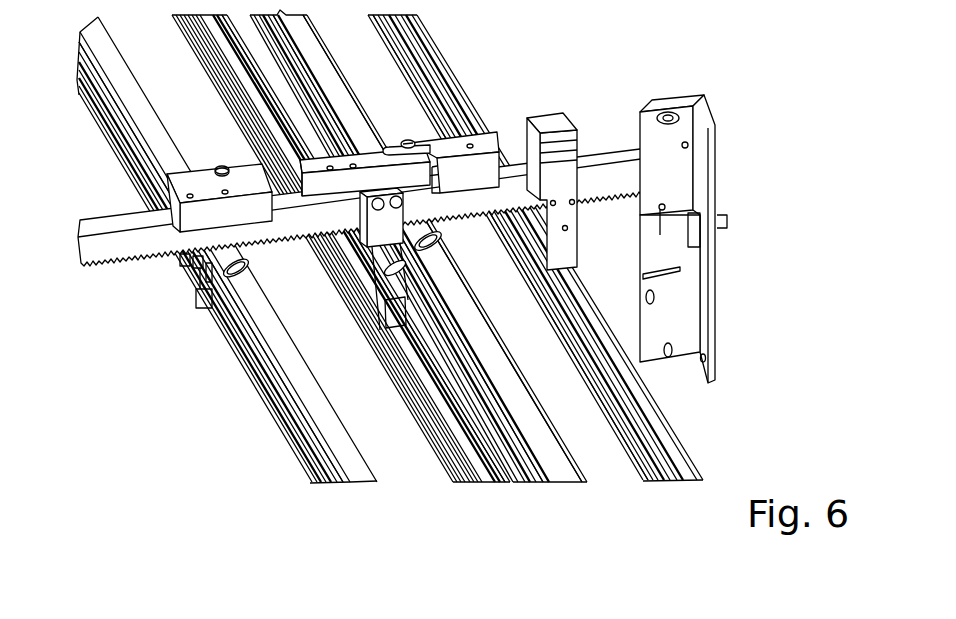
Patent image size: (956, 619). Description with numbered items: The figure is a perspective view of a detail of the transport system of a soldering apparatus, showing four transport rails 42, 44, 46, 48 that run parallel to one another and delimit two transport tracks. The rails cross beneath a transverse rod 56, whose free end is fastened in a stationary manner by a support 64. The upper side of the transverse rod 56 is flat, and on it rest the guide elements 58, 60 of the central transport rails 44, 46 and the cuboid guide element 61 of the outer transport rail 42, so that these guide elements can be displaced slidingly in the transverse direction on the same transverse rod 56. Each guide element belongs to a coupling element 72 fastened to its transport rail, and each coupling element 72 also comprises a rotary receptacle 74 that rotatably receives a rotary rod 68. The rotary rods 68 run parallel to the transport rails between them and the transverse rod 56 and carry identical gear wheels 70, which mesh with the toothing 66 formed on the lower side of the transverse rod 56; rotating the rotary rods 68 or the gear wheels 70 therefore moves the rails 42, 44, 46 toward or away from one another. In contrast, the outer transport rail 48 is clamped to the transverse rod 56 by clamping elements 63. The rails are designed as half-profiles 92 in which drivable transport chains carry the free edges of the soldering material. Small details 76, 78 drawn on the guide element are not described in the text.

The transport rail 42 is at (263, 366).
The transport rail 44 is at (453, 461).
The transport rail 46 is at (547, 471).
The transport rail 48 is at (681, 452).
The transverse rod 56 is at (595, 161).
The guide element 58 is at (333, 172).
The guide element 60 is at (470, 144).
The guide element 61 is at (198, 182).
The clamping element 63 is at (548, 116).
The support 64 is at (713, 175).
The toothing 66 is at (128, 262).
The rotary rod 68 is at (340, 441).
The gear wheel 70 is at (248, 250).
The coupling element 72 is at (373, 270).
The rotary receptacle 74 is at (382, 306).
The pin 76 is at (393, 166).
The fastener 78 is at (410, 139).
The half-profile 92 is at (433, 441).